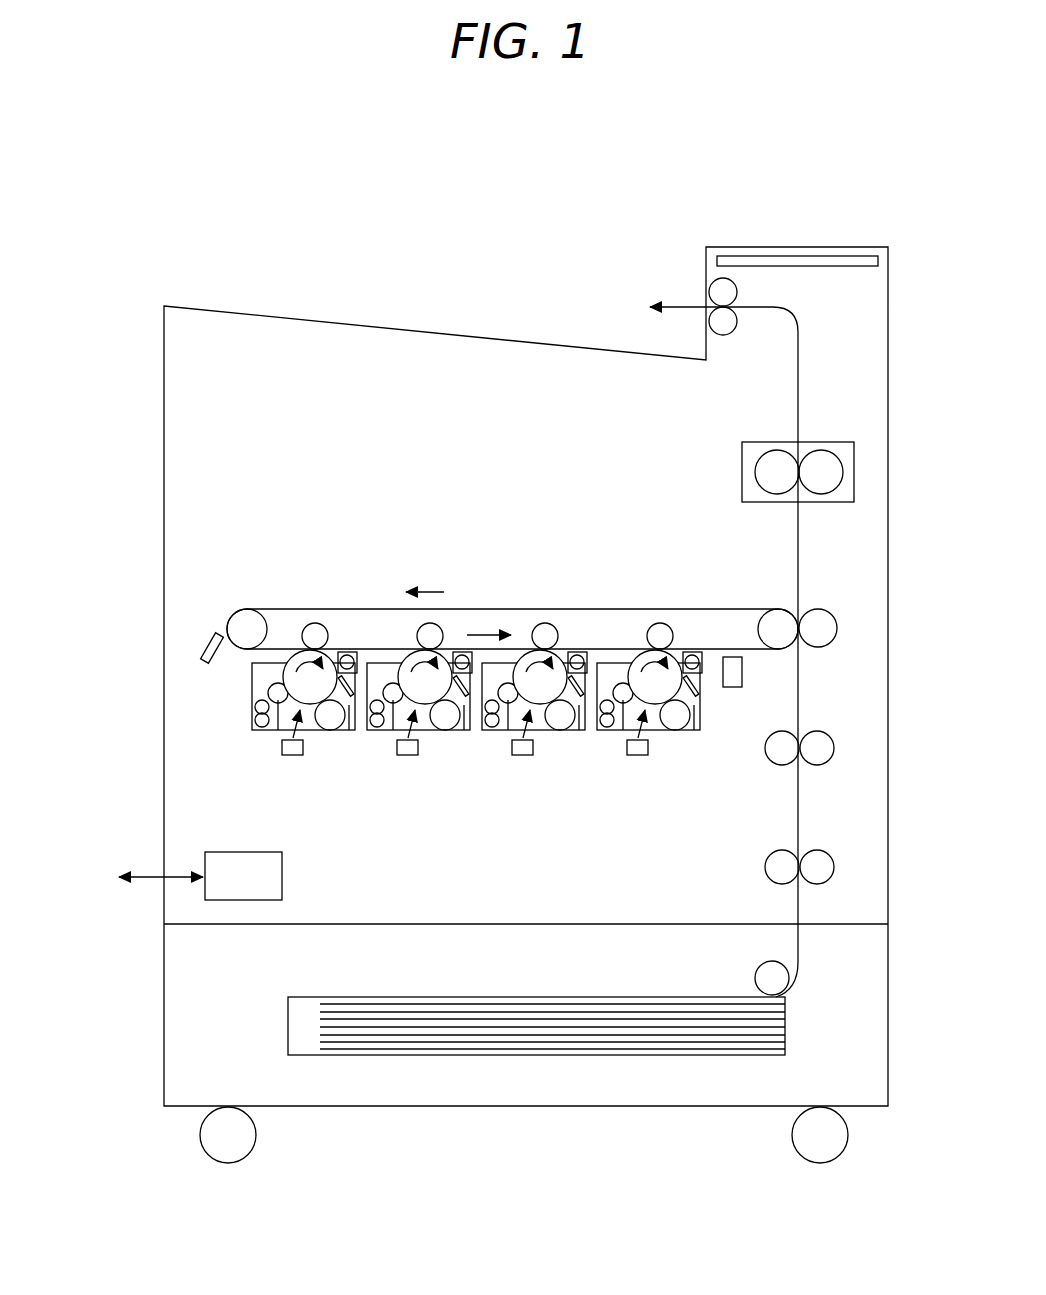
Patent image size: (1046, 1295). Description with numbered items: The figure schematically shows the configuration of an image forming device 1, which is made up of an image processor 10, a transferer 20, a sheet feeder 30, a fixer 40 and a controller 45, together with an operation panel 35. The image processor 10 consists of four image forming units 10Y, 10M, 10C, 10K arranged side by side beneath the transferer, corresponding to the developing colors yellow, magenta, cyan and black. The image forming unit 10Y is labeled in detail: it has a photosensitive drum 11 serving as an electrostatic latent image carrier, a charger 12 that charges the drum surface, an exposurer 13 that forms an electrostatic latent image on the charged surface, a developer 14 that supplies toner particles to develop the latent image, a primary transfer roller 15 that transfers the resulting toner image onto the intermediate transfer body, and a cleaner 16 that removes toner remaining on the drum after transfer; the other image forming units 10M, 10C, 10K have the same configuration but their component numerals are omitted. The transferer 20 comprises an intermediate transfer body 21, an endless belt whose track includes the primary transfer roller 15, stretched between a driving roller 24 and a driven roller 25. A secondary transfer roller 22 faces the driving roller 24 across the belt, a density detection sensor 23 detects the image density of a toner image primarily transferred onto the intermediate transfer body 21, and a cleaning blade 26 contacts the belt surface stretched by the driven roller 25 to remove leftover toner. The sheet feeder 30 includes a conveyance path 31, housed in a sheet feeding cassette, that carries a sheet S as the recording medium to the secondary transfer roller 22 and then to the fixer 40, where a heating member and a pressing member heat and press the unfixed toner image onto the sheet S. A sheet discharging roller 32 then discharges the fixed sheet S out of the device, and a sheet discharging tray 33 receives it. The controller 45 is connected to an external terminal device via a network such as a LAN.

The image forming device 1 is at (483, 217).
The image processor 10 is at (391, 697).
The image forming unit 10Y is at (303, 692).
The image forming unit 10M is at (428, 770).
The image forming unit 10C is at (545, 770).
The image forming unit 10K is at (657, 770).
The photosensitive drum 11 is at (303, 677).
The charger 12 is at (320, 677).
The exposurer 13 is at (320, 677).
The developer 14 is at (303, 677).
The primary transfer roller 15 is at (315, 623).
The cleaner 16 is at (347, 676).
The transferer 20 is at (514, 581).
The intermediate transfer body 21 is at (500, 608).
The secondary transfer roller 22 is at (838, 627).
The density detection sensor 23 is at (743, 675).
The driving roller 24 is at (797, 612).
The driven roller 25 is at (232, 615).
The cleaning blade 26 is at (200, 642).
The sheet feeder 30 is at (439, 1072).
The conveyance path 31 is at (802, 955).
The sheet discharging roller 32 is at (710, 282).
The sheet discharging tray 33 is at (370, 333).
The operation panel 35 is at (796, 256).
The fixer 40 is at (864, 430).
The controller 45 is at (205, 855).
The sheet S is at (620, 1056).